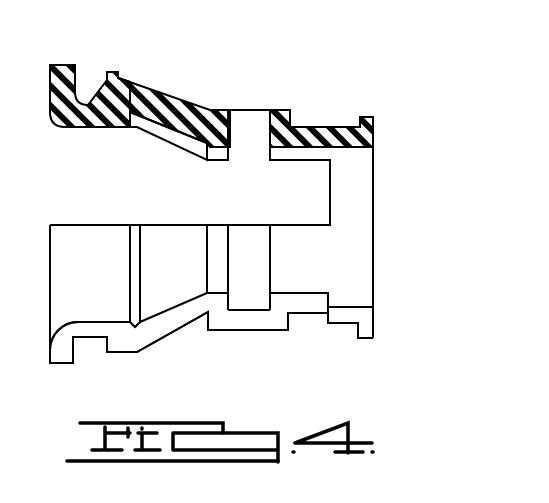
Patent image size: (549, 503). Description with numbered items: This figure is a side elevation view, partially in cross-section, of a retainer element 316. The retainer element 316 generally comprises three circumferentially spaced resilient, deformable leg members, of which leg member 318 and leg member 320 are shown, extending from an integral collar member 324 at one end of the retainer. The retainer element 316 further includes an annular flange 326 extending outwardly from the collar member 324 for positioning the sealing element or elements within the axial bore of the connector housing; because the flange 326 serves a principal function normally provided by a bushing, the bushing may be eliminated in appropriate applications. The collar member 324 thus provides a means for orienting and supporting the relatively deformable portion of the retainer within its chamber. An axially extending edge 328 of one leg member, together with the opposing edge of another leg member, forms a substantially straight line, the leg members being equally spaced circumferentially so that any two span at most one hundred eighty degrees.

The retainer element 316 is at (268, 82).
The leg member 318 is at (130, 82).
The leg member 320 is at (143, 343).
The collar member 324 is at (347, 188).
The annular flange 326 is at (363, 113).
The edge 328 is at (180, 190).